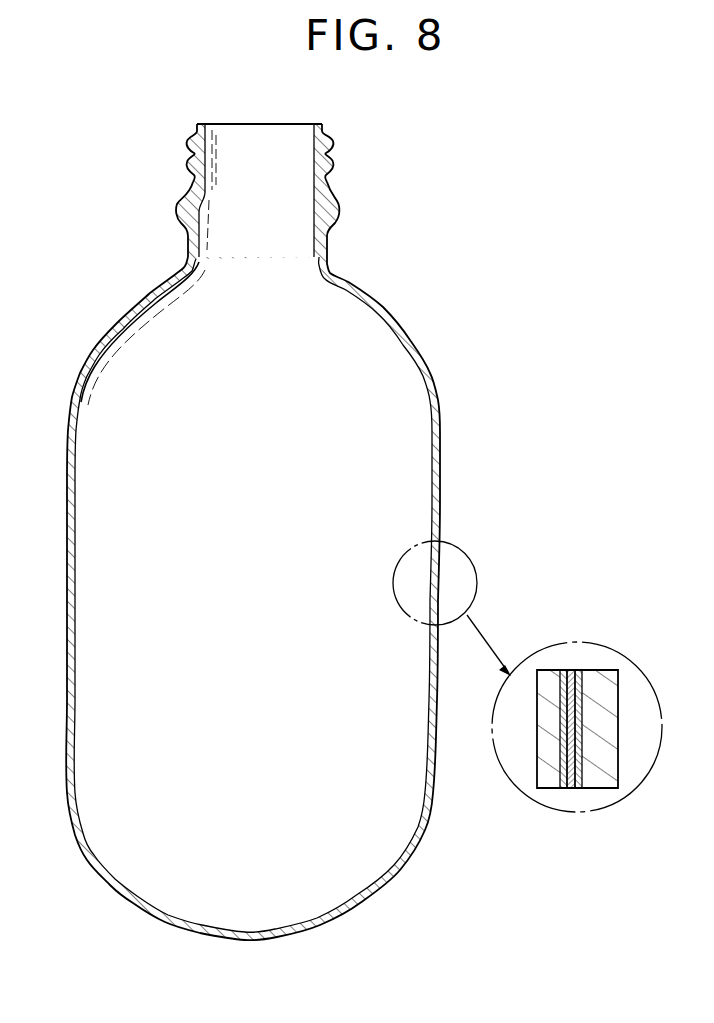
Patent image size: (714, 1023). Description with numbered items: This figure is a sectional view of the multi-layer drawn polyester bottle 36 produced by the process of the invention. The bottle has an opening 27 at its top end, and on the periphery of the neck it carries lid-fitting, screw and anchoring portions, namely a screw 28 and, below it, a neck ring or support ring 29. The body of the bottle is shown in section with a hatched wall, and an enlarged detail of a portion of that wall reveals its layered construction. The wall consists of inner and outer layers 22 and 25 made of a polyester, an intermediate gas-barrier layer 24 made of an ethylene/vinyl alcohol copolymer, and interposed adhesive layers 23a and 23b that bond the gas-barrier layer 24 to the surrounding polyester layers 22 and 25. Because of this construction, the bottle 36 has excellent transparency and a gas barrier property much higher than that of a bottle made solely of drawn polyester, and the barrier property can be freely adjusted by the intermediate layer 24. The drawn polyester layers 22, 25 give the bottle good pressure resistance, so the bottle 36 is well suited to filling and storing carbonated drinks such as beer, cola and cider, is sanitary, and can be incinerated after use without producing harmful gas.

The inner layer 22 is at (542, 788).
The adhesive layer 23a is at (562, 790).
The intermediate gas-barrier layer 24 is at (572, 672).
The adhesive layer 23b is at (578, 790).
The outer layer 25 is at (618, 788).
The opening 27 is at (322, 124).
The screw 28 is at (338, 148).
The neck ring (support ring) 29 is at (338, 222).
The multi-layer drawn polyester bottle 36 is at (307, 507).